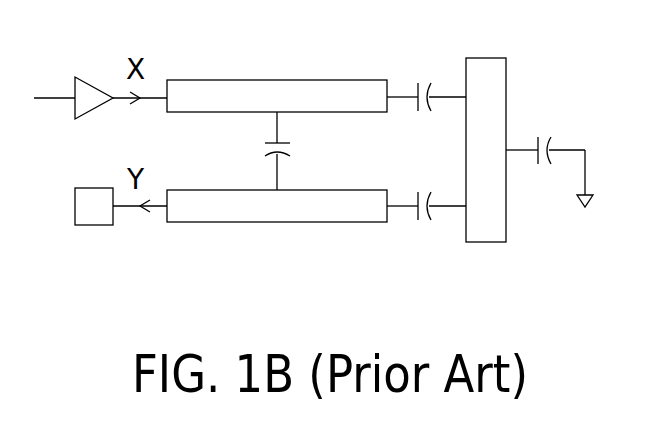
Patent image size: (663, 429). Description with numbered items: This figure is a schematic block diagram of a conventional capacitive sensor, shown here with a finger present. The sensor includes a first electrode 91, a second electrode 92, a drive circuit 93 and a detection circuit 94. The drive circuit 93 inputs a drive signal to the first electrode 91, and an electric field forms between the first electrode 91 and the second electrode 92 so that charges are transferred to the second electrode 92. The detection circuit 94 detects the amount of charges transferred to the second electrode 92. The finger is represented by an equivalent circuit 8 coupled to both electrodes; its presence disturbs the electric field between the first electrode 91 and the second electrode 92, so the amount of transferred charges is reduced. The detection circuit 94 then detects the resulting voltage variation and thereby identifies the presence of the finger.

The equivalent circuit 8 is at (506, 77).
The first electrode 91 is at (282, 80).
The second electrode 92 is at (277, 223).
The drive circuit 93 is at (95, 80).
The detection circuit 94 is at (99, 226).